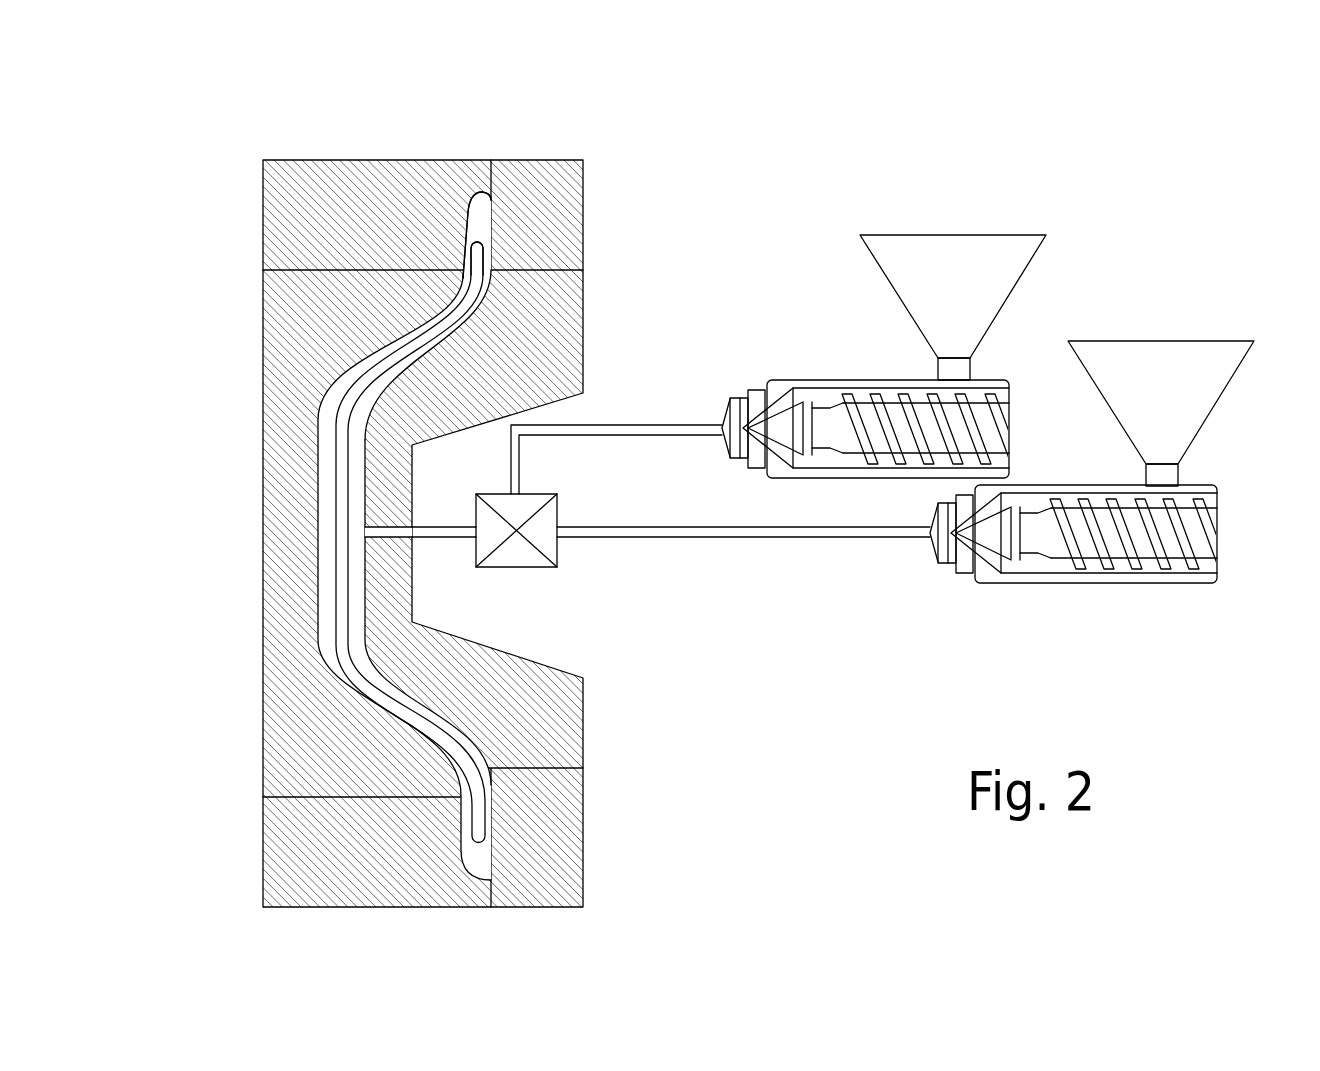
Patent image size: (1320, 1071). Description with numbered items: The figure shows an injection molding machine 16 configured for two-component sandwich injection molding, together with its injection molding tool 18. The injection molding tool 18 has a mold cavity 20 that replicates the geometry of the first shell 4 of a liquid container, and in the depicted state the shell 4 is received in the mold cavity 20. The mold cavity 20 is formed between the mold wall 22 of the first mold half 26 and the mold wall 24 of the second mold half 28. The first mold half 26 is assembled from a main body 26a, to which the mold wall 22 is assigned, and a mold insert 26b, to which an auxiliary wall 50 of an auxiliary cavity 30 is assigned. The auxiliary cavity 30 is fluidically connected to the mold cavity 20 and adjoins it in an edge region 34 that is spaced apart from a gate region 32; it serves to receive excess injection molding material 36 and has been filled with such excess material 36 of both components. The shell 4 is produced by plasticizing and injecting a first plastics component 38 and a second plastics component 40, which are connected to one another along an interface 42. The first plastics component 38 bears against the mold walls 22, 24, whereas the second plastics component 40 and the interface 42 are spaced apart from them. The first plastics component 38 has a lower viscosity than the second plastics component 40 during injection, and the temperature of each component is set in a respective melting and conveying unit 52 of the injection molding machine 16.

The injection molding tool 18 is at (333, 137).
The first mold half 26 is at (273, 490).
The main body 26a is at (292, 340).
The mold insert 26b is at (313, 827).
The second mold half 28 is at (540, 353).
The mold wall 22 is at (320, 398).
The mold wall 24 is at (485, 318).
The auxiliary wall 50 is at (457, 282).
The auxiliary cavity 30 is at (624, 183).
The excess injection molding material 36 is at (483, 219).
The mold cavity 20 is at (312, 513).
The first shell 4 is at (380, 357).
The edge region 34 is at (488, 256).
The interface 42 is at (348, 536).
The gate region 32 is at (417, 553).
The second plastics component 40 is at (437, 525).
The first plastics component 38 is at (774, 527).
The injection molding machine 16 is at (1014, 334).
The melting and conveying unit 52 is at (1076, 217).